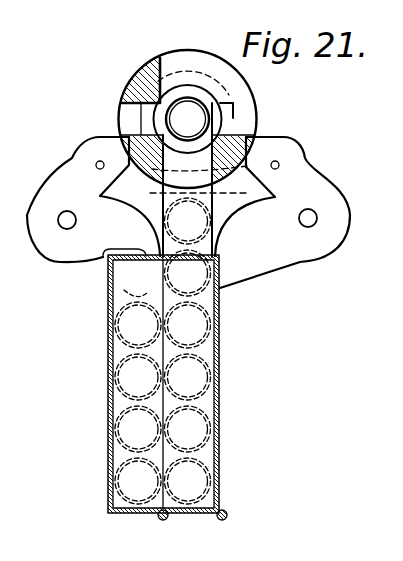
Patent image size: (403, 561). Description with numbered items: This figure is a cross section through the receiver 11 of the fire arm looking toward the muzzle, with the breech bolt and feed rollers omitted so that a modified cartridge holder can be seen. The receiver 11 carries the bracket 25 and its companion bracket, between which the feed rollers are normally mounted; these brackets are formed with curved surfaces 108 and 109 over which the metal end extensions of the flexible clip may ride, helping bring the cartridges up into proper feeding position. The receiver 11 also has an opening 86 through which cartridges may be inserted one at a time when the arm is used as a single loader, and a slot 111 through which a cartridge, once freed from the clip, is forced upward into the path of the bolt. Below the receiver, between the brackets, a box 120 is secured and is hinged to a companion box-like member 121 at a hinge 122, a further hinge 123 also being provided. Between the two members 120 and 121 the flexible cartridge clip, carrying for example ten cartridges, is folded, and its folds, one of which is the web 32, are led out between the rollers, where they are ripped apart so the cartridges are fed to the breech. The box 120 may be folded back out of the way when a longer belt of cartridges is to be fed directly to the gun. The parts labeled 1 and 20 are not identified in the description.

The hub ring 1 is at (220, 126).
The receiver 11 is at (252, 93).
The cross slot 20 is at (127, 117).
The bracket 25 is at (87, 137).
The web 32 is at (275, 161).
The opening 86 is at (188, 70).
The curved surface 108 is at (239, 215).
The curved surface 109 is at (138, 212).
The slot 111 is at (185, 170).
The box 120 is at (108, 330).
The companion box-like member 121 is at (220, 373).
The hinge 122 is at (228, 517).
The hinge 123 is at (165, 519).